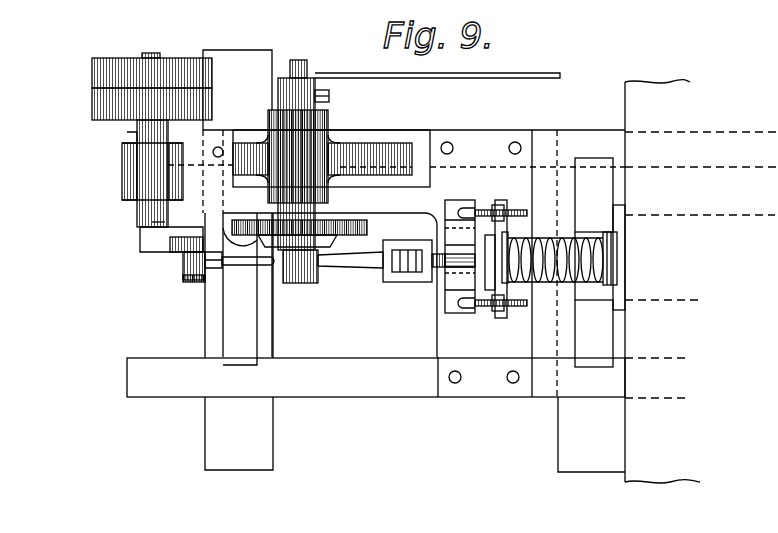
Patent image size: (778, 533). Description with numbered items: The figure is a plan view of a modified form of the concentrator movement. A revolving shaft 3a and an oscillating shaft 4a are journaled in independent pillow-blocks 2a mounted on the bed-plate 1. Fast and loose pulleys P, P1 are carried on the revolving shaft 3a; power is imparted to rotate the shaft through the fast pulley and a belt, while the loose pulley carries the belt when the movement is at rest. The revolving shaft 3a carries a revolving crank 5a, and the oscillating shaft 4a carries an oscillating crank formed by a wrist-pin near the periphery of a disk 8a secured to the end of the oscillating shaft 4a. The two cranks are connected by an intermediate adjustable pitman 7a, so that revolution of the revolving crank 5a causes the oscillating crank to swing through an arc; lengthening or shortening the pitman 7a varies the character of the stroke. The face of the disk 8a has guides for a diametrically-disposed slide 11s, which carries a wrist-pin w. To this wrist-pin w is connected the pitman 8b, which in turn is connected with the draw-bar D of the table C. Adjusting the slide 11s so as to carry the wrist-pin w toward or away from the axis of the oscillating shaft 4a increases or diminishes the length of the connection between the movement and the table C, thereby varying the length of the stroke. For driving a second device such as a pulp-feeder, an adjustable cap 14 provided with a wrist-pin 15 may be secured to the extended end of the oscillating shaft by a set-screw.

The bed-plate 1 is at (500, 118).
The loose pulley P1 is at (108, 72).
The fast pulley P is at (108, 100).
The pillow-block 2a is at (124, 176).
The adjustable cap 14 is at (287, 88).
The wrist-pin 15 is at (310, 52).
The revolving shaft 3a is at (140, 218).
The revolving crank 5a is at (185, 277).
The adjustable pitman 7a is at (237, 262).
The oscillating shaft 4a is at (322, 214).
The disk 8a is at (368, 229).
The wrist-pin w is at (312, 284).
The pitman 8b is at (358, 268).
The slide 11s is at (280, 245).
The draw-bar D is at (556, 278).
The table C is at (701, 281).